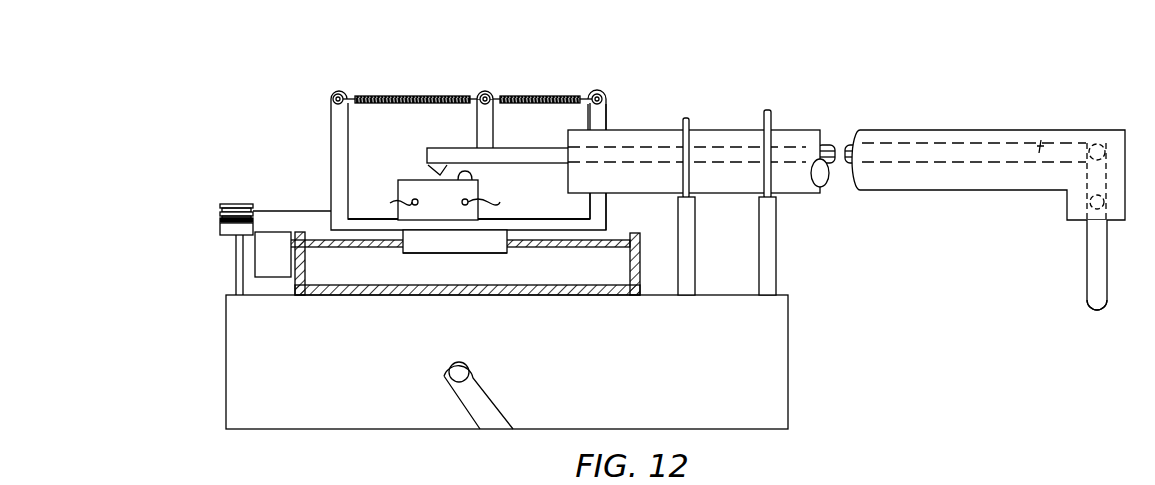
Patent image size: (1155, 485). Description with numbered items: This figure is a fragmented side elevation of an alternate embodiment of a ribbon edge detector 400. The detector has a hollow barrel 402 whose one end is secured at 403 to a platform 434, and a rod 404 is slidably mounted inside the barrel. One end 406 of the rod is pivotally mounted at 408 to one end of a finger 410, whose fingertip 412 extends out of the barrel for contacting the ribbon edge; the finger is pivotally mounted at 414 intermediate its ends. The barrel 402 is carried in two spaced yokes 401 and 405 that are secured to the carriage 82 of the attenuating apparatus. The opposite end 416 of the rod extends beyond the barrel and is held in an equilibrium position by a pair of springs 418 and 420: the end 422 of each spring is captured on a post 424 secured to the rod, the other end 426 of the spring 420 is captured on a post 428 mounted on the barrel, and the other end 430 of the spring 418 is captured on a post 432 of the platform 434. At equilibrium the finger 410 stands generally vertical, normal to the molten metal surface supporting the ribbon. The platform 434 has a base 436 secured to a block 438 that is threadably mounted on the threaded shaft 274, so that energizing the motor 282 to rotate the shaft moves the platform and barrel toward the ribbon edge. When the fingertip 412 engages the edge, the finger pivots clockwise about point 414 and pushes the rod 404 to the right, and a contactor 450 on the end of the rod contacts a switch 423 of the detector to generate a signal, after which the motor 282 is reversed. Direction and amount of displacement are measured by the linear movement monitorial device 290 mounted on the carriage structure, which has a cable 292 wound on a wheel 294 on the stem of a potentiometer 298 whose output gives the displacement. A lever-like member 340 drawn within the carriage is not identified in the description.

The carriage 82 is at (793, 337).
The threaded shaft 274 is at (336, 247).
The motor 282 is at (256, 251).
The linear movement monitorial device 290 is at (214, 217).
The cable 292 is at (281, 210).
The wheel 294 is at (226, 204).
The potentiometer 298 is at (219, 229).
The lever 340 is at (335, 423).
The edge detector 400 is at (788, 127).
The yoke 401 is at (686, 117).
The hollow barrel 402 is at (965, 128).
The barrel end securing point 403 is at (607, 197).
The rod 404 is at (517, 146).
The yoke 405 is at (767, 109).
The rod end 406 is at (1041, 140).
The pivot mount 408 is at (1102, 146).
The finger 410 is at (1085, 243).
The fingertip 412 is at (1093, 305).
The intermediate pivot 414 is at (1089, 202).
The rod end 416 is at (418, 148).
The spring 418 is at (404, 95).
The spring 420 is at (546, 94).
The spring end 422 is at (485, 93).
The switch 423 is at (474, 175).
The post 424 is at (476, 117).
The spring end 426 is at (598, 93).
The post 428 is at (606, 110).
The spring end 430 is at (334, 96).
The post 432 is at (330, 141).
The platform 434 is at (371, 216).
The base 436 is at (506, 219).
The block 438 is at (481, 254).
The contactor 450 is at (441, 181).